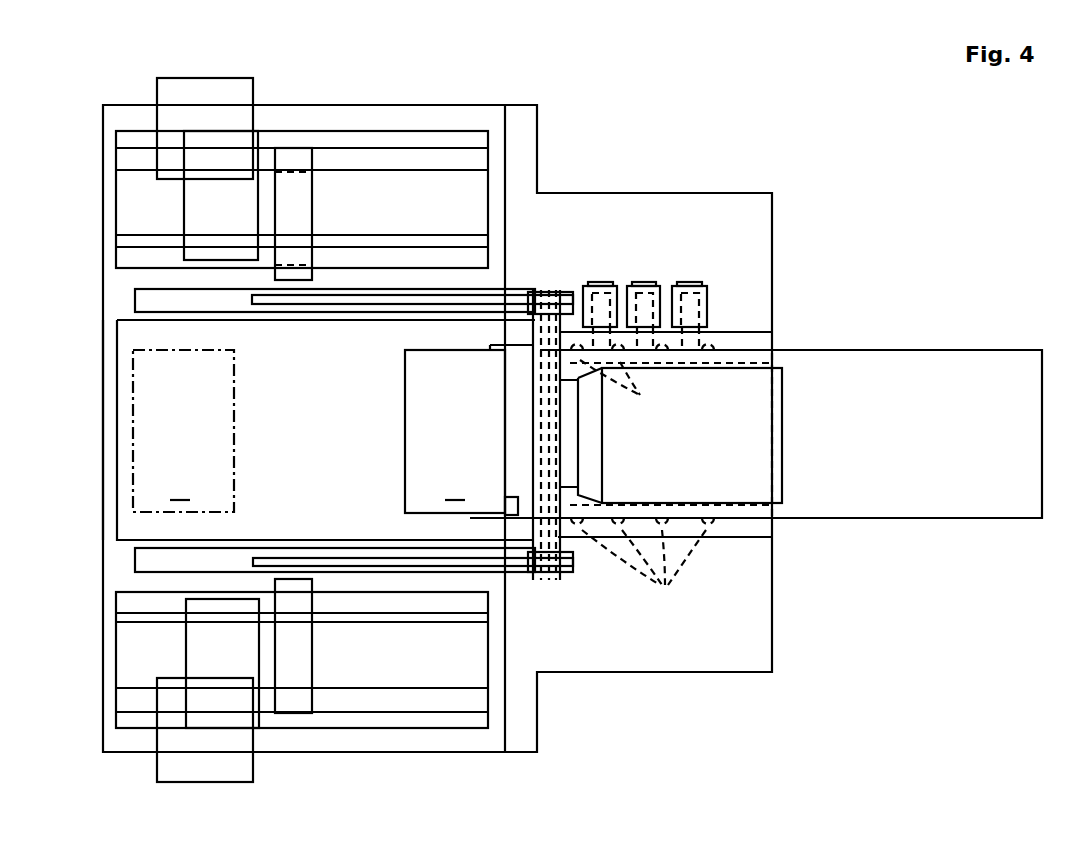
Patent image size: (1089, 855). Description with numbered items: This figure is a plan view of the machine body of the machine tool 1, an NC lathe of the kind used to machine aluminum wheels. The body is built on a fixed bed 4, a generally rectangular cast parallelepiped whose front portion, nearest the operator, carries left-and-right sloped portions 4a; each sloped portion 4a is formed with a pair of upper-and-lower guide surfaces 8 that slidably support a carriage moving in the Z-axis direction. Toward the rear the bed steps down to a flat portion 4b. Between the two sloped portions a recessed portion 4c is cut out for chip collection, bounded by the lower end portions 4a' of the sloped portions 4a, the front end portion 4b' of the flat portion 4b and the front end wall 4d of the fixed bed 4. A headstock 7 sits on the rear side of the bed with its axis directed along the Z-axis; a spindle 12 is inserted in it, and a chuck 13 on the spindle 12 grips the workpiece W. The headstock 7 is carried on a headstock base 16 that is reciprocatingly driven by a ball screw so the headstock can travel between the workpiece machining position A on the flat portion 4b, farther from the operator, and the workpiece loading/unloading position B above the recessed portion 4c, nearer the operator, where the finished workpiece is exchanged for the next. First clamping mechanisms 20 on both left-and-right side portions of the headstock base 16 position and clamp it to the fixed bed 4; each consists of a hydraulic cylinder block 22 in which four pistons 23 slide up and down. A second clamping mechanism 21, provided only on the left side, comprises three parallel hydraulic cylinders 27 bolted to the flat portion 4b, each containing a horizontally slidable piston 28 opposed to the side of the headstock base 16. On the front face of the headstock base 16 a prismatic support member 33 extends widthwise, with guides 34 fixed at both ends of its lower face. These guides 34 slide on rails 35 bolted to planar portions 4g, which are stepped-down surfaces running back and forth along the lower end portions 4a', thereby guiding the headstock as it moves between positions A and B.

The machine tool 1 is at (713, 124).
The fixed bed 4 is at (120, 100).
The sloped portions 4a is at (266, 430).
The lower end portions 4a' is at (82, 430).
The flat portion 4b is at (802, 203).
The front end portion 4b' is at (548, 555).
The recessed portion 4c is at (122, 395).
The front end wall 4d is at (103, 425).
The planar portions 4g is at (225, 305).
The headstock 7 is at (788, 385).
The guide surfaces 8 is at (125, 150).
The spindle 12 is at (580, 430).
The chuck 13 is at (505, 510).
The headstock base 16 is at (838, 350).
The first clamping mechanisms 20 is at (745, 330).
The second clamping mechanism 21 is at (690, 270).
The hydraulic cylinder block 22 is at (760, 334).
The pistons 23 is at (735, 308).
The hydraulic cylinders 27 is at (592, 283).
The piston 28 is at (605, 293).
The support member 33 is at (533, 330).
The guides 34 is at (555, 292).
The rails 35 is at (310, 305).
The workpiece machining position A is at (469, 429).
The workpiece loading/unloading position B is at (183, 431).
The workpiece W is at (405, 415).